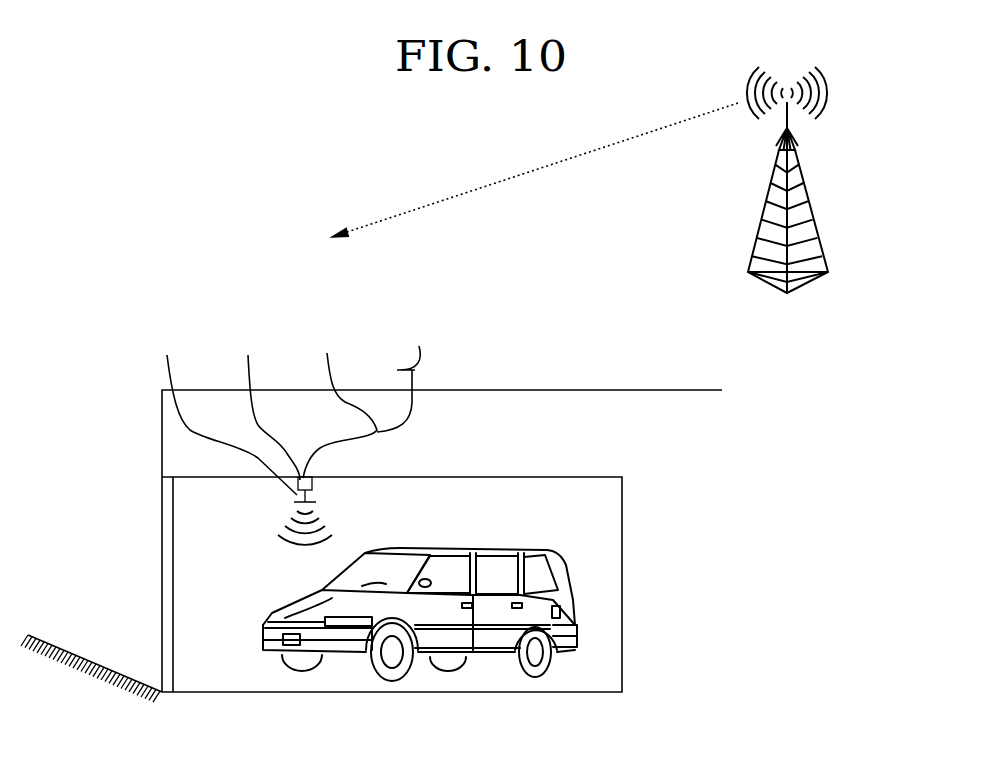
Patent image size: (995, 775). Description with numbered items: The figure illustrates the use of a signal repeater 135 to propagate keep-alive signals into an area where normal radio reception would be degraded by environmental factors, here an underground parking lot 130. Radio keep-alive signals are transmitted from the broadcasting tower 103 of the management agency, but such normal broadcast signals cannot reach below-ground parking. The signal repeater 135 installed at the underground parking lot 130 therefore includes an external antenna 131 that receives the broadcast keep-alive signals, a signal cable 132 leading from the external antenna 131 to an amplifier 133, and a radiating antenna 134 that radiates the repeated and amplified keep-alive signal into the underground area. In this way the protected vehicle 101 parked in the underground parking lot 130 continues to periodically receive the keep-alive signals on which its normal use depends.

The vehicle 101 is at (468, 550).
The broadcasting tower 103 is at (808, 206).
The underground parking lot 130 is at (203, 597).
The external antenna 131 is at (403, 377).
The signal cable 132 is at (340, 400).
The amplifier 133 is at (262, 401).
The radiating antenna 134 is at (221, 409).
The signal repeater 135 is at (143, 305).